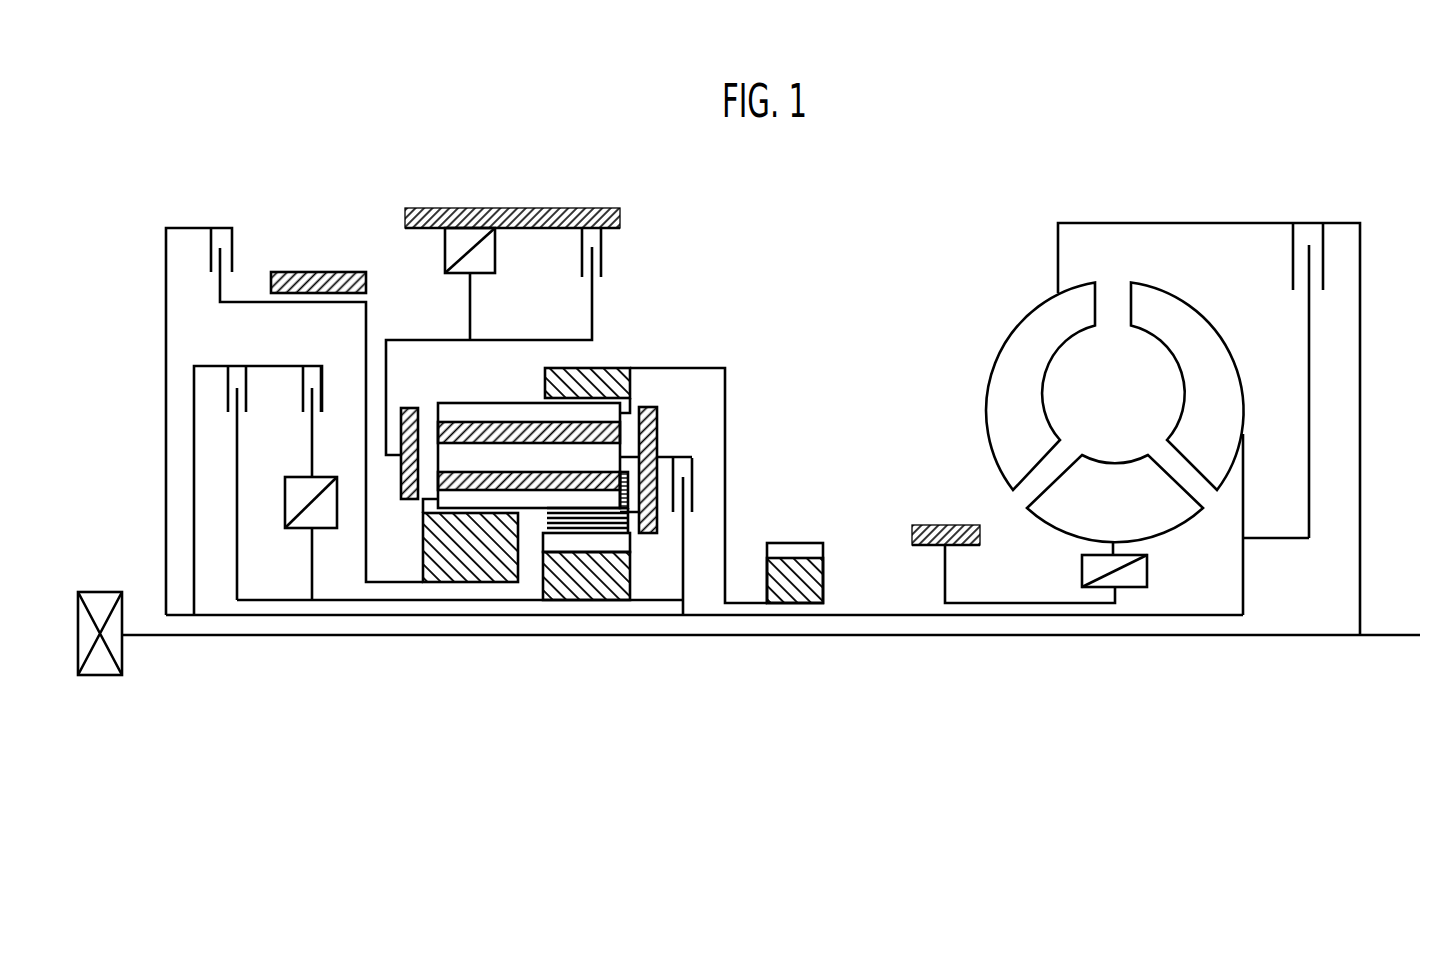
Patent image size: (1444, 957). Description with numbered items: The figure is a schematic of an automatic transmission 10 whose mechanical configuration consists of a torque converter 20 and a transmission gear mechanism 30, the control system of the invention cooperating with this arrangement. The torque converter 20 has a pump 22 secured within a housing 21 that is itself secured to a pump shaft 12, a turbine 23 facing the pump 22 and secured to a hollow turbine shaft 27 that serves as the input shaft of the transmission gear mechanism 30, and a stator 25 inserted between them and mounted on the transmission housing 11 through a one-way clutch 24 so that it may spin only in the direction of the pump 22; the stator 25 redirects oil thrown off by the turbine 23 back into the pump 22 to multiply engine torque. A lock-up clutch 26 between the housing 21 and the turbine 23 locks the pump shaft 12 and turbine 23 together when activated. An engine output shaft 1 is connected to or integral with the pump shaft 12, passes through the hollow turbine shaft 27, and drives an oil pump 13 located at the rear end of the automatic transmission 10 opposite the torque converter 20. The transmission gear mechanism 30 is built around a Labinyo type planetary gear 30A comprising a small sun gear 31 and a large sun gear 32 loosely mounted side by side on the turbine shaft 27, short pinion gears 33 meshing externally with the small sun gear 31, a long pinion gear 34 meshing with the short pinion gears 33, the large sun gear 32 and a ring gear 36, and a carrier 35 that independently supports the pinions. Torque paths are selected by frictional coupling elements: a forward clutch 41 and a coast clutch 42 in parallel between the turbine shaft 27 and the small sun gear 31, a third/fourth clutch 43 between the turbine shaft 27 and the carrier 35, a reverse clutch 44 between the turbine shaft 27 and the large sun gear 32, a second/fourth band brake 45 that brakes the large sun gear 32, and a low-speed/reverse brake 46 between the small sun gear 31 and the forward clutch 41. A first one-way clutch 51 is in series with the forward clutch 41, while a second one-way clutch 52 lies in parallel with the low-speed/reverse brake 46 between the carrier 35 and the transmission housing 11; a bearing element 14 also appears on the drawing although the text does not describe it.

The engine output shaft 1 is at (1392, 633).
The automatic transmission 10 is at (1383, 195).
The transmission housing 11 is at (531, 208).
The pump shaft 12 is at (217, 637).
The oil pump 13 is at (103, 677).
The bearing 14 is at (794, 543).
The torque converter 20 is at (1030, 253).
The housing 21 is at (1230, 222).
The pump 22 is at (1017, 343).
The turbine 23 is at (1185, 310).
The one-way clutch 24 is at (1148, 568).
The stator 25 is at (1065, 520).
The lock-up clutch 26 is at (1325, 272).
The turbine shaft 27 is at (855, 615).
The transmission gear mechanism 30 is at (722, 355).
The planetary gear 30A is at (538, 664).
The small sun gear 31 is at (607, 595).
The large sun gear 32 is at (468, 580).
The short pinion gears 33 is at (603, 527).
The long pinion gear 34 is at (472, 404).
The carrier 35 is at (651, 407).
The ring gear 36 is at (618, 368).
The forward clutch 41 is at (303, 392).
The coast clutch 42 is at (228, 393).
The third/fourth clutch 43 is at (681, 458).
The reverse clutch 44 is at (233, 262).
The second/fourth brake 45 is at (337, 272).
The low-speed/reverse brake 46 is at (602, 258).
The first one-way clutch 51 is at (285, 502).
The second one-way clutch 52 is at (488, 258).